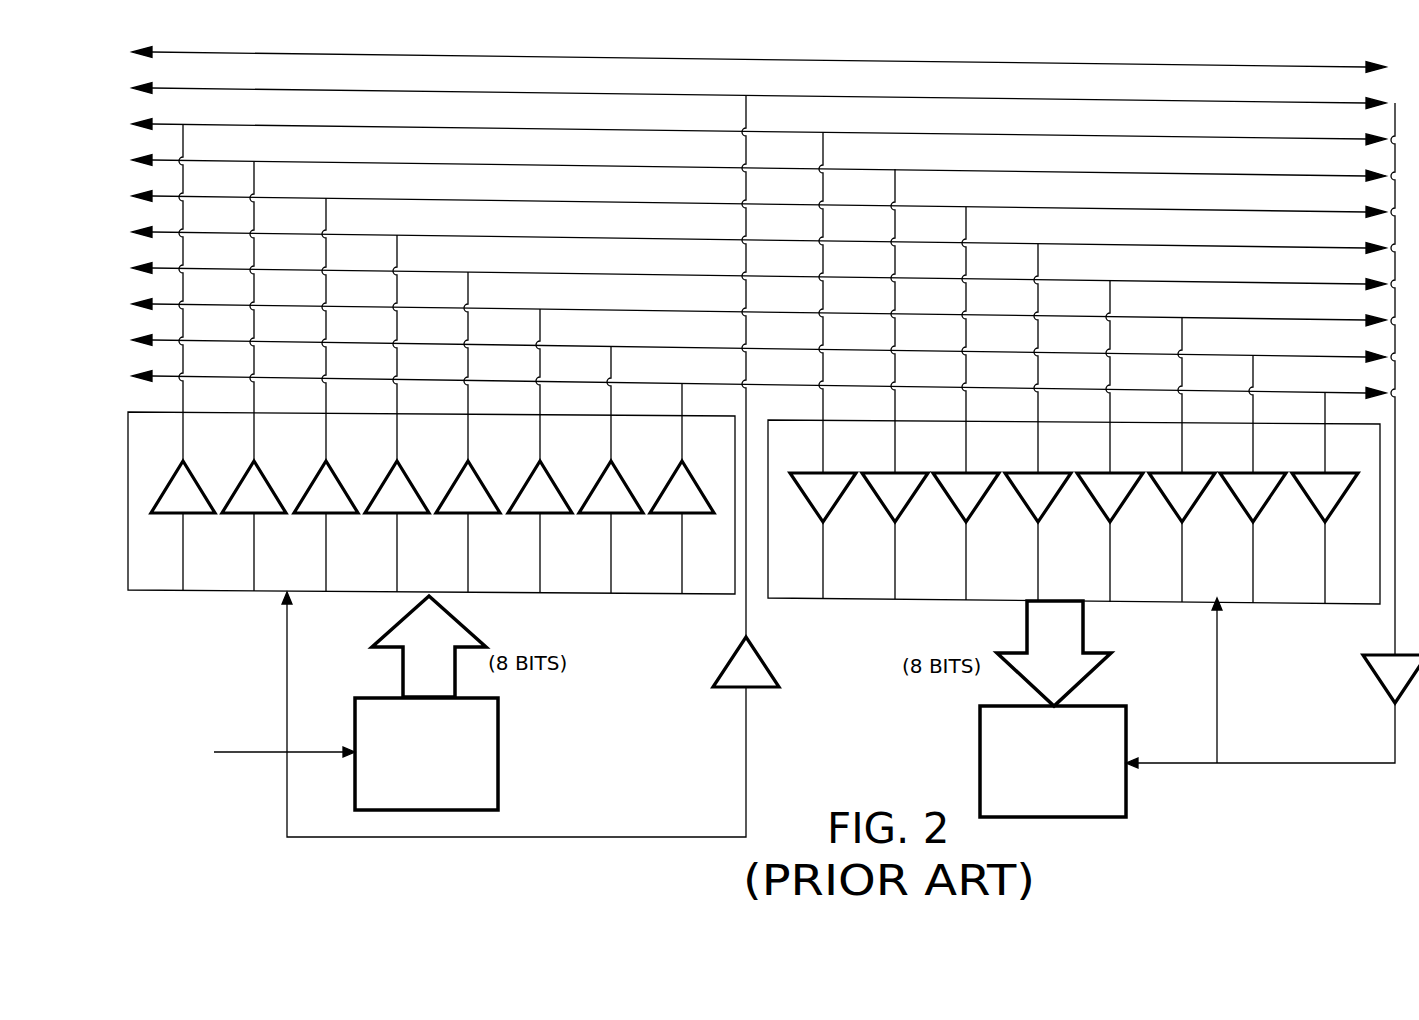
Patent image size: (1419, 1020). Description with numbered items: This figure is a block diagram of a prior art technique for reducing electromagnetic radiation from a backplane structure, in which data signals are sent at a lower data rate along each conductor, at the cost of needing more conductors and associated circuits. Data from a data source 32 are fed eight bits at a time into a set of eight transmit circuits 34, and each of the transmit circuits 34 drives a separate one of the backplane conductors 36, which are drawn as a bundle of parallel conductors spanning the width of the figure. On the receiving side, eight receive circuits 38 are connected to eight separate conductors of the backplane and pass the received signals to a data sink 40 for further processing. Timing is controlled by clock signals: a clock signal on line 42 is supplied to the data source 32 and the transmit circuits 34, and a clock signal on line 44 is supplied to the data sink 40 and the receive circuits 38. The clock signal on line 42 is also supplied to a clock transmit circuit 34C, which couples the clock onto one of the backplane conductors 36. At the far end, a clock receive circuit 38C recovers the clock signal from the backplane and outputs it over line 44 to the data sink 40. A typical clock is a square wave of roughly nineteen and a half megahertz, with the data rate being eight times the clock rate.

The data source 32 is at (500, 718).
The transmit circuits 34 is at (663, 549).
The clock transmit circuit 34C is at (755, 689).
The backplane conductors 36 is at (128, 392).
The receive circuits 38 is at (1293, 543).
The clock receive circuit 38C is at (1372, 670).
The data sink 40 is at (980, 732).
The line 42 is at (270, 752).
The line 44 is at (1195, 765).